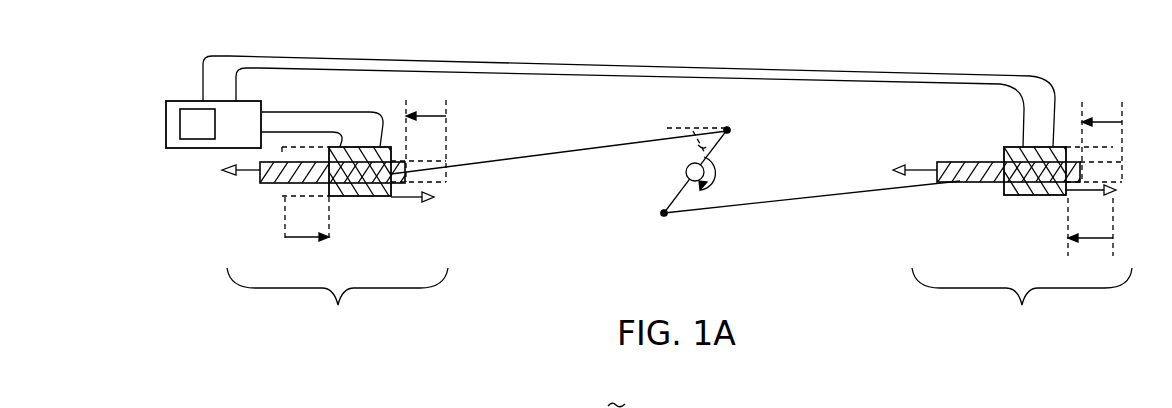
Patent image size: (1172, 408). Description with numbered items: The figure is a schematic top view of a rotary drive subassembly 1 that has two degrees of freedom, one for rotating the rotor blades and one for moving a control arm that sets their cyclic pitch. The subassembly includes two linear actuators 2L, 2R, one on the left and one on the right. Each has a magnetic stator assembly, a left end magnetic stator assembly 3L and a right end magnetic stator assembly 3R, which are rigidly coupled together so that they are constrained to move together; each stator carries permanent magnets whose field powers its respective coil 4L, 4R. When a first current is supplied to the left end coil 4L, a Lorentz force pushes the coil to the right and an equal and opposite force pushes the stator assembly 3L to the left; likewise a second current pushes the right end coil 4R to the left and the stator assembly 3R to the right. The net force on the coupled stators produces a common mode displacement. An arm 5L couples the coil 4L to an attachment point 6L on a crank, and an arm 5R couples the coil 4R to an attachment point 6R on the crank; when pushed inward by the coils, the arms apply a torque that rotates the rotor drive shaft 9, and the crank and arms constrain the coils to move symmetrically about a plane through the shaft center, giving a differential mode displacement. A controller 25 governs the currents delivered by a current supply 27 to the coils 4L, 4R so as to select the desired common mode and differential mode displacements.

The rotary drive subassembly 1 is at (563, 304).
The left linear actuator 2L is at (336, 211).
The right linear actuator 2R is at (1014, 211).
The left end magnetic stator assembly 3L is at (274, 184).
The right end magnetic stator assembly 3R is at (971, 162).
The left end coil 4L is at (365, 197).
The right end coil 4R is at (1038, 196).
The left arm 5L is at (584, 148).
The right arm 5R is at (825, 197).
The left attachment point 6L is at (731, 128).
The right attachment point 6R is at (666, 218).
The rotor drive shaft 9 is at (686, 172).
The controller 25 is at (248, 134).
The current supply 27 is at (207, 134).